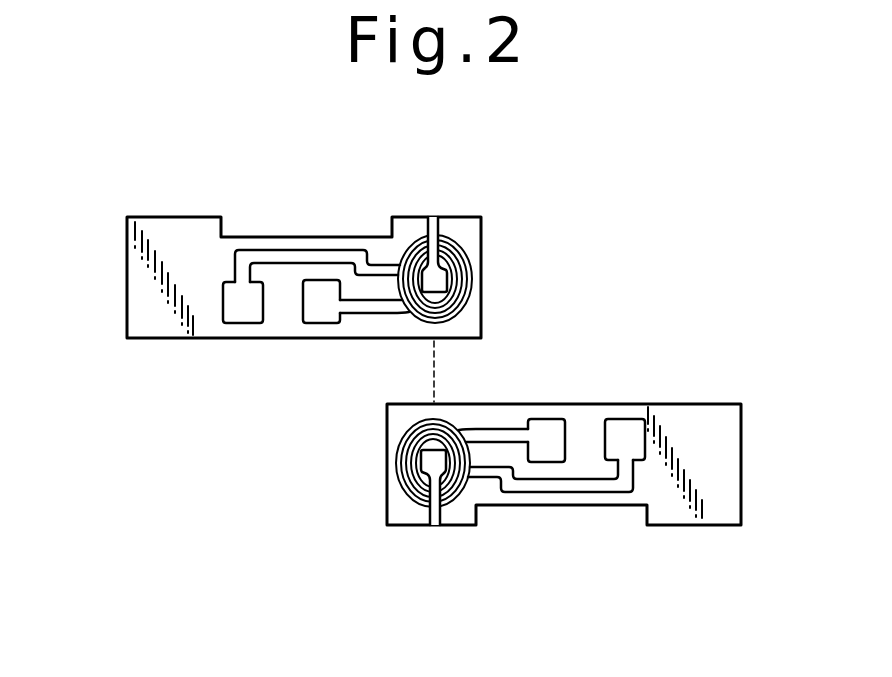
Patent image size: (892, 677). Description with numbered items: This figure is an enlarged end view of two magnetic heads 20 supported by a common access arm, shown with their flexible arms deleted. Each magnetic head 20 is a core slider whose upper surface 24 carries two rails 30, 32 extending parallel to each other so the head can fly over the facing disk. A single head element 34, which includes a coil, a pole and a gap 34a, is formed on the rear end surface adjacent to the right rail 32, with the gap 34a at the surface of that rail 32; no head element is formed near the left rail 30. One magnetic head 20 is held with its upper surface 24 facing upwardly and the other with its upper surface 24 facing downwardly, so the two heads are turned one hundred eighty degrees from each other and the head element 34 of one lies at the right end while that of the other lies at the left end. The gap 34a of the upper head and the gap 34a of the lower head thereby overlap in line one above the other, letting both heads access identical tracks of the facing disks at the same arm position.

The magnetic head 20 is at (138, 297).
The upper surface 24 is at (255, 237).
The rail 30 is at (183, 230).
The rail 32 is at (473, 250).
The head element 34 is at (452, 240).
The gap 34a is at (433, 225).